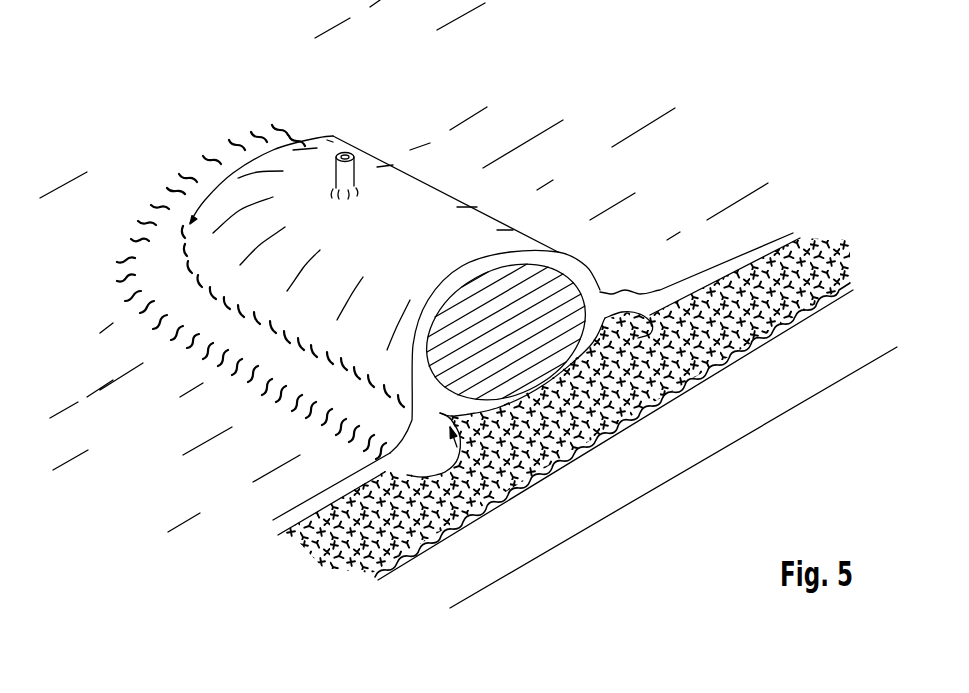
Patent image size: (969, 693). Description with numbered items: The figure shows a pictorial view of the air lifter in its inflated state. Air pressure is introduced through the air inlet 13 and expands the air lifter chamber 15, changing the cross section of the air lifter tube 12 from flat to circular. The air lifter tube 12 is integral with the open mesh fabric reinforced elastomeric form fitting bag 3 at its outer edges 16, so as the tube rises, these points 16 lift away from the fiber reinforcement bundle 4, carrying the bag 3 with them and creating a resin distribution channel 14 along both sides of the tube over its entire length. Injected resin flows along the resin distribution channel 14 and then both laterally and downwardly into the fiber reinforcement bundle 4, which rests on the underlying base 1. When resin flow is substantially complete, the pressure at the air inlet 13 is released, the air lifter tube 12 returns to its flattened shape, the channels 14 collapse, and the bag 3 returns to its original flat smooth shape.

The base surface 1 is at (830, 350).
The open mesh fabric reinforced elastomeric form fitting bag 3 is at (150, 430).
The fiber reinforcement bundle 4 is at (813, 263).
The air lifter tube 12 is at (413, 221).
The air inlet 13 is at (343, 145).
The resin distribution channel 14 is at (407, 474).
The air lifter chamber 15 is at (508, 323).
The outer edges 16 is at (580, 288).